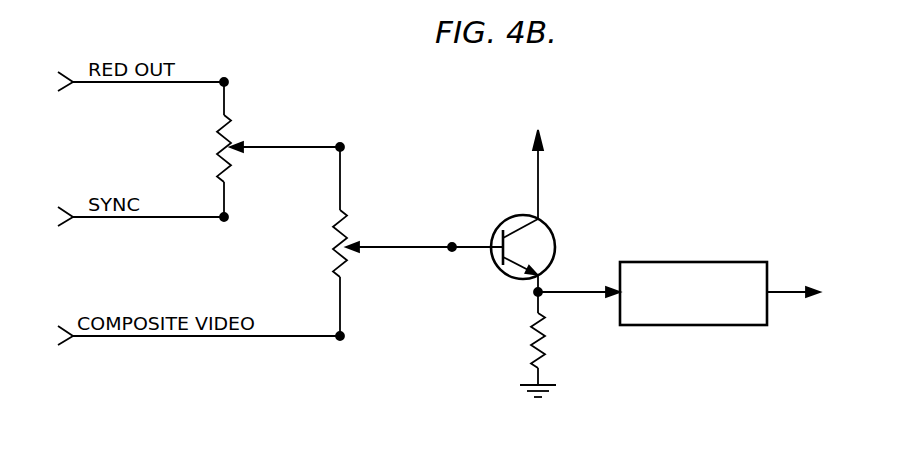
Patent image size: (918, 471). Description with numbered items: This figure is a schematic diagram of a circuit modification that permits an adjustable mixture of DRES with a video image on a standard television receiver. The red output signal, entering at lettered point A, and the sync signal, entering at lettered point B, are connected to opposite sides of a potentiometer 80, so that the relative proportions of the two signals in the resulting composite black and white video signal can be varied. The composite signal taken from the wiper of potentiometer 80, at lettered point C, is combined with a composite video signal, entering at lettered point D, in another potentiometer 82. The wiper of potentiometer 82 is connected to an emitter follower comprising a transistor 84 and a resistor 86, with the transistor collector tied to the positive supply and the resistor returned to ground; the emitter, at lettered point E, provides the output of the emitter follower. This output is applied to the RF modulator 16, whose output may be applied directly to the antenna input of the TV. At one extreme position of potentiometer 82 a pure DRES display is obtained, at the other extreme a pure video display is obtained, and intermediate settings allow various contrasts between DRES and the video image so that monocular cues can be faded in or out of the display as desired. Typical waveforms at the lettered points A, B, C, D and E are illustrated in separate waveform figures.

The potentiometer 80 is at (222, 137).
The potentiometer 82 is at (335, 247).
The transistor 84 is at (552, 235).
The resistor 86 is at (546, 348).
The RF modulator 16 is at (725, 322).
The lettered point A is at (227, 84).
The lettered point B is at (227, 219).
The lettered point C is at (344, 146).
The lettered point D is at (344, 338).
The lettered point E is at (536, 292).